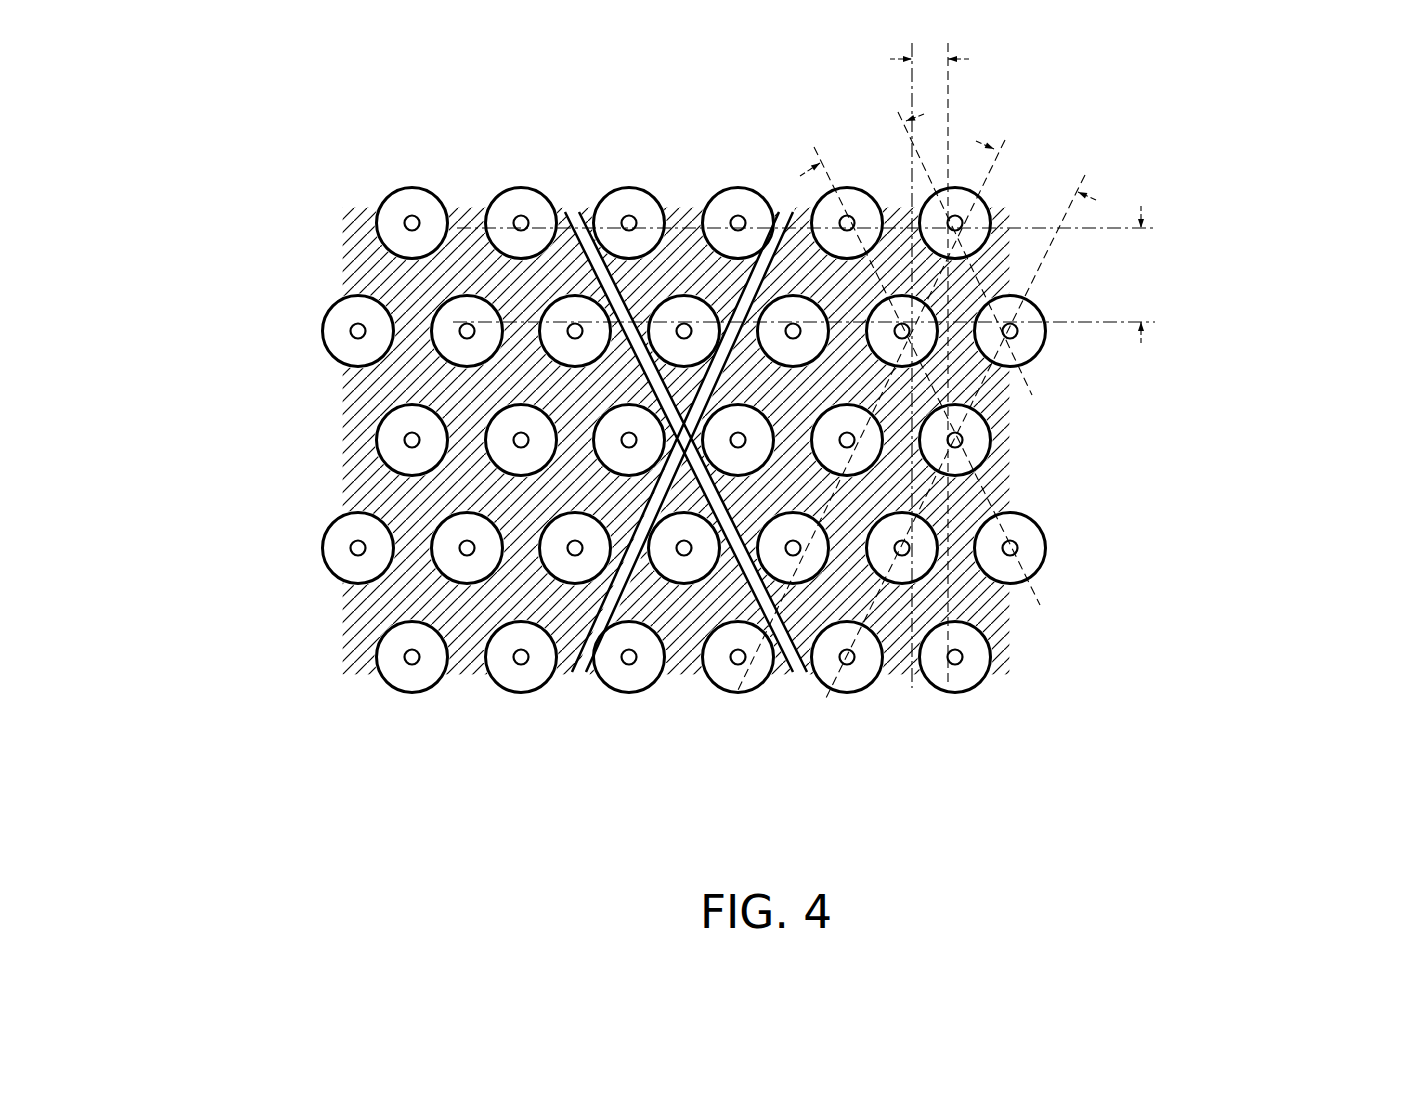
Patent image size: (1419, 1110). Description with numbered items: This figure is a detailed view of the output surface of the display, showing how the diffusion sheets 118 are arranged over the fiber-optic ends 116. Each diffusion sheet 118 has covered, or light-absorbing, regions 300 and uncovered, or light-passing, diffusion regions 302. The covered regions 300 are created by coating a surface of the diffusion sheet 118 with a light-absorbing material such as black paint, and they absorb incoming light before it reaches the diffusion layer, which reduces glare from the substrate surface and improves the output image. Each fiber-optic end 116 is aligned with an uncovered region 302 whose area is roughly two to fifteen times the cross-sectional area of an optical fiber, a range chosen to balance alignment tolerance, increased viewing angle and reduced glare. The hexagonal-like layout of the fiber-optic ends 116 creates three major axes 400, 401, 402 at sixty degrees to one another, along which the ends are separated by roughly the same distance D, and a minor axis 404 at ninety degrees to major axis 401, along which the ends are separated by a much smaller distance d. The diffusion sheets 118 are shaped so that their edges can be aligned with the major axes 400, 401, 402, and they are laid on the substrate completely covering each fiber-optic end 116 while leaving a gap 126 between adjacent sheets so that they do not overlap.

The fiber-optic end 116 is at (522, 215).
The diffusion sheet 118 is at (727, 445).
The gap 126 is at (563, 688).
The covered region 300 is at (362, 422).
The uncovered region 302 is at (320, 333).
The major axis 400 is at (866, 133).
The major axis 401 is at (1120, 250).
The major axis 402 is at (1045, 167).
The minor axis 404 is at (948, 87).